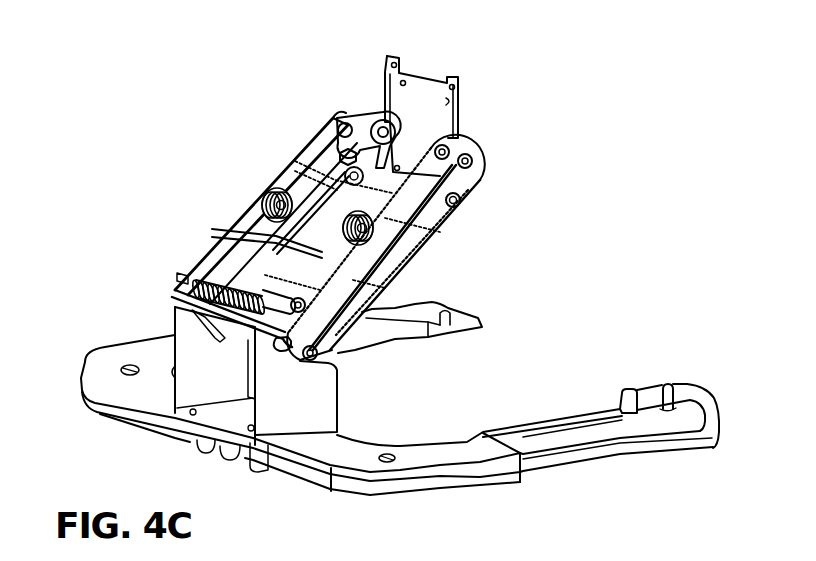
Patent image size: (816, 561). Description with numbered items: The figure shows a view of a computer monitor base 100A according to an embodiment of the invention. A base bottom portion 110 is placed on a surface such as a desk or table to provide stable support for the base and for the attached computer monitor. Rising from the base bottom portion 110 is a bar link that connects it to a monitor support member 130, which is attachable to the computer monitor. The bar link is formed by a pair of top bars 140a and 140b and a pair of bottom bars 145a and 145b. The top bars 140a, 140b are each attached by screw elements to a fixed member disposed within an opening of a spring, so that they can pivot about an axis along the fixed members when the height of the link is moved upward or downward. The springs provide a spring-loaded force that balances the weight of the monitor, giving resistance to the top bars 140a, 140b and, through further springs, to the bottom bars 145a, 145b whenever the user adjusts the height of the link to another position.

The computer monitor base 100A is at (258, 84).
The base bottom portion 110 is at (563, 477).
The monitor support member 130 is at (426, 78).
The top bar 140a is at (247, 229).
The top bar 140b is at (400, 283).
The bottom bar 145a is at (235, 266).
The bottom bar 145b is at (443, 217).